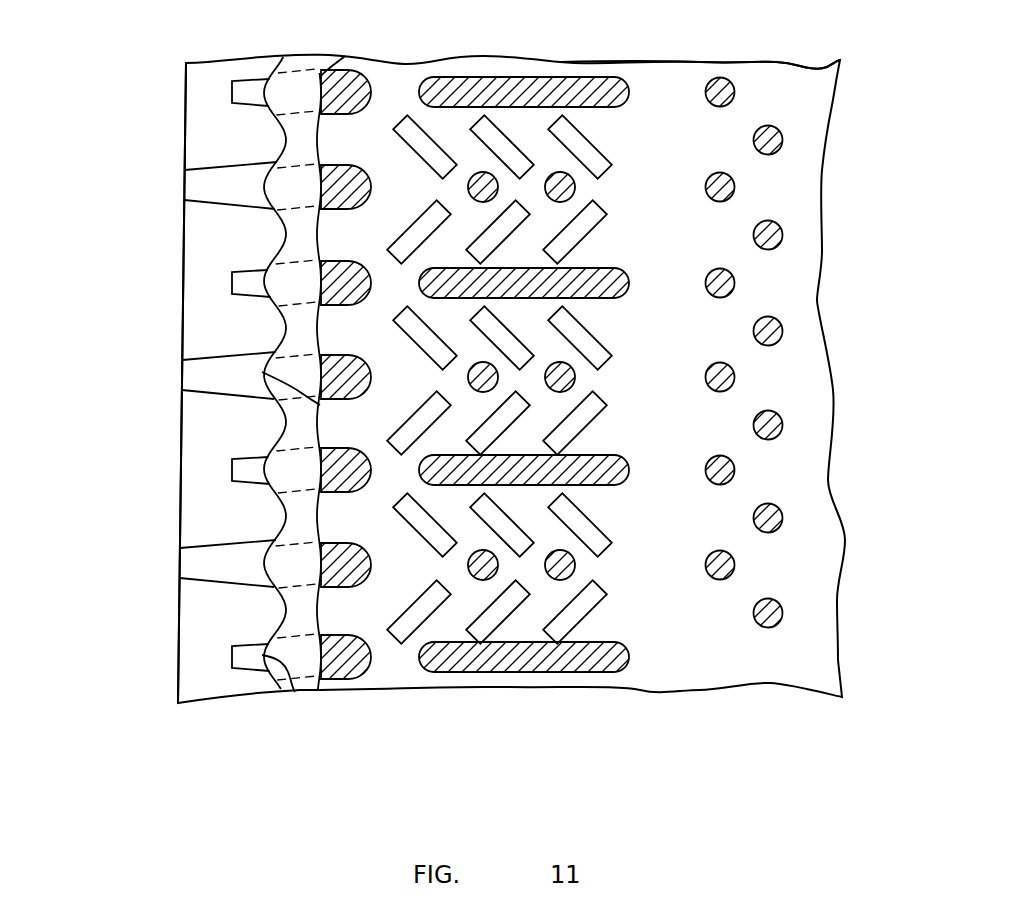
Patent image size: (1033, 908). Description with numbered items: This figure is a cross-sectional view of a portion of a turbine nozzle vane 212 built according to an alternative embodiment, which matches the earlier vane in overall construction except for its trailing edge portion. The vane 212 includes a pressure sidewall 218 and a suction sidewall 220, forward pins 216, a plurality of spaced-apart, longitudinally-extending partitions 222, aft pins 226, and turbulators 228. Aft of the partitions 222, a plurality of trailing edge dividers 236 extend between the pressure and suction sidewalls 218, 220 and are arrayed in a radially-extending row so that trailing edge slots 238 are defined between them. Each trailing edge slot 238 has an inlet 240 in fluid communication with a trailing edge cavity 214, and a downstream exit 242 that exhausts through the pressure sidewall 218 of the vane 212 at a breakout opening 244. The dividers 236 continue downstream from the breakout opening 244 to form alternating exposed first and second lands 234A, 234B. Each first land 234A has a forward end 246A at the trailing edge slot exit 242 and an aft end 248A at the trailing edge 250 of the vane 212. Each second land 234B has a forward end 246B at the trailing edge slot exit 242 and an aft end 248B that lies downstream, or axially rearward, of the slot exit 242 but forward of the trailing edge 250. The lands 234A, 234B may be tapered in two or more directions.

The turbine nozzle vane 212 is at (167, 100).
The trailing edge cavity 214 is at (662, 117).
The forward pins 216 is at (783, 133).
The pressure sidewall 218 is at (305, 60).
The suction sidewall 220 is at (718, 628).
The partitions 222 is at (530, 85).
The aft pins 226 is at (567, 562).
The turbulators 228 is at (588, 432).
The first lands 234A is at (184, 172).
The second lands 234B is at (232, 276).
The trailing edge dividers 236 is at (360, 572).
The trailing edge slots 238 is at (218, 432).
The inlet 240 is at (358, 618).
The downstream exit 242 is at (277, 623).
The breakout opening 244 is at (275, 503).
The forward end of first land 246A is at (320, 405).
The forward end of second land 246B is at (295, 692).
The aft end of first land 248A is at (182, 373).
The aft end of second land 248B is at (223, 653).
The trailing edge 250 is at (183, 305).